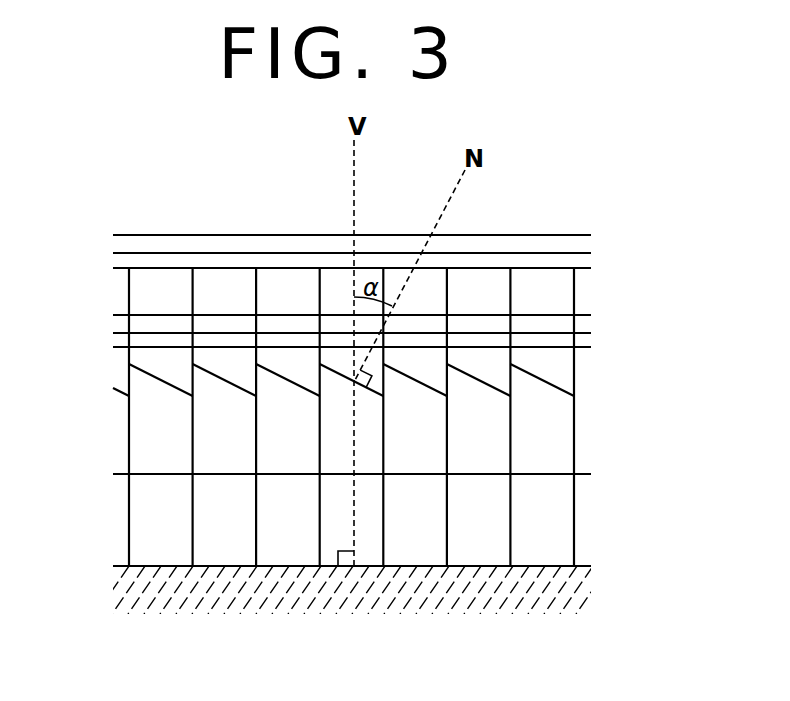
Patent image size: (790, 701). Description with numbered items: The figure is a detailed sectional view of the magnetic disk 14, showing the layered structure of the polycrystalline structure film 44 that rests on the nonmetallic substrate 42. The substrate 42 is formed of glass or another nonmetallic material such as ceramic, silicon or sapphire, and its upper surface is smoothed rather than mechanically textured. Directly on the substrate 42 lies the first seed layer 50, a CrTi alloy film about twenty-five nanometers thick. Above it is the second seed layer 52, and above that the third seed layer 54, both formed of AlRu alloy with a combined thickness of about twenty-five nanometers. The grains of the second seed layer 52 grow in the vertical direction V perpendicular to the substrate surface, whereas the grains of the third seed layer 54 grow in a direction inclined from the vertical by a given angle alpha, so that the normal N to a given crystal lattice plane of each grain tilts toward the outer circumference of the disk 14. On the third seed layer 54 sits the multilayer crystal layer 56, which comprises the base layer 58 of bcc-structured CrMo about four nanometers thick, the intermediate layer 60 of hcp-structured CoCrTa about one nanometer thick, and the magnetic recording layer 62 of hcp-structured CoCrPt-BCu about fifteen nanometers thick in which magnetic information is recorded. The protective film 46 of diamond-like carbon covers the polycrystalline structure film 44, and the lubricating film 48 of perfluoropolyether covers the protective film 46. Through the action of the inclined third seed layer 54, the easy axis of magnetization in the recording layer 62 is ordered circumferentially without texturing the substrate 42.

The magnetic disk 14 is at (268, 224).
The nonmetallic substrate 42 is at (392, 602).
The polycrystalline structure film 44 is at (97, 272).
The protective film 46 is at (128, 262).
The lubricating film 48 is at (140, 243).
The first seed layer 50 is at (558, 508).
The second seed layer 52 is at (558, 431).
The third seed layer 54 is at (565, 377).
The multilayer crystal layer 56 is at (525, 265).
The base layer 58 is at (565, 339).
The intermediate layer 60 is at (565, 325).
The magnetic recording layer 62 is at (565, 288).